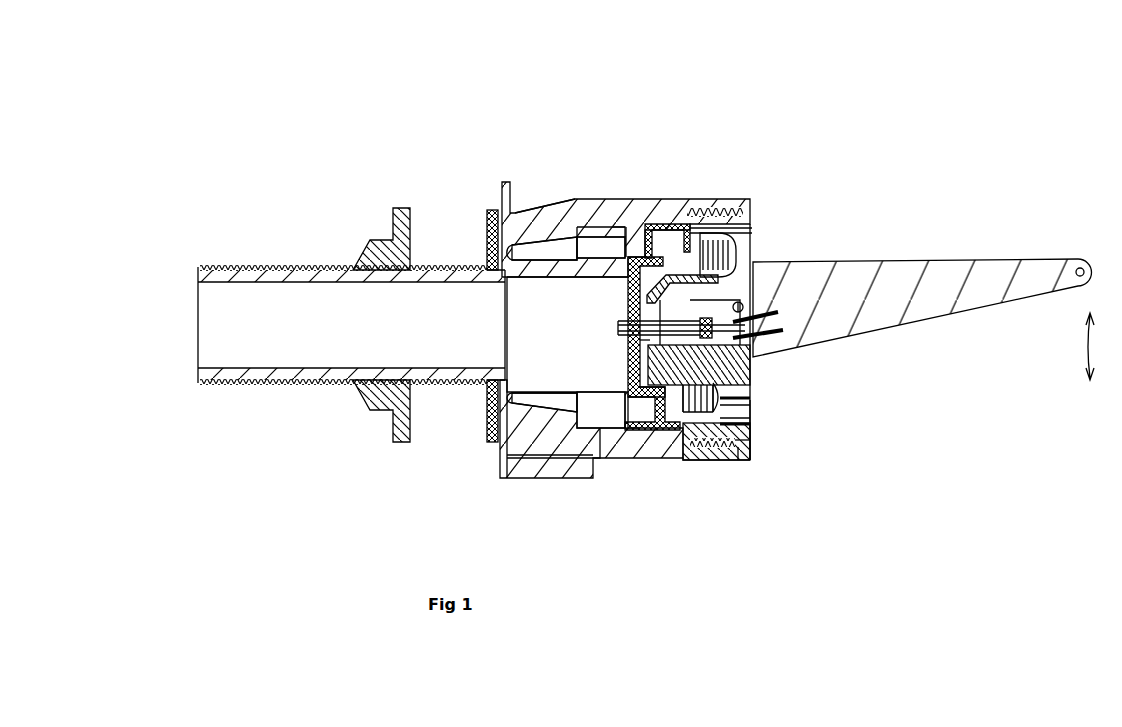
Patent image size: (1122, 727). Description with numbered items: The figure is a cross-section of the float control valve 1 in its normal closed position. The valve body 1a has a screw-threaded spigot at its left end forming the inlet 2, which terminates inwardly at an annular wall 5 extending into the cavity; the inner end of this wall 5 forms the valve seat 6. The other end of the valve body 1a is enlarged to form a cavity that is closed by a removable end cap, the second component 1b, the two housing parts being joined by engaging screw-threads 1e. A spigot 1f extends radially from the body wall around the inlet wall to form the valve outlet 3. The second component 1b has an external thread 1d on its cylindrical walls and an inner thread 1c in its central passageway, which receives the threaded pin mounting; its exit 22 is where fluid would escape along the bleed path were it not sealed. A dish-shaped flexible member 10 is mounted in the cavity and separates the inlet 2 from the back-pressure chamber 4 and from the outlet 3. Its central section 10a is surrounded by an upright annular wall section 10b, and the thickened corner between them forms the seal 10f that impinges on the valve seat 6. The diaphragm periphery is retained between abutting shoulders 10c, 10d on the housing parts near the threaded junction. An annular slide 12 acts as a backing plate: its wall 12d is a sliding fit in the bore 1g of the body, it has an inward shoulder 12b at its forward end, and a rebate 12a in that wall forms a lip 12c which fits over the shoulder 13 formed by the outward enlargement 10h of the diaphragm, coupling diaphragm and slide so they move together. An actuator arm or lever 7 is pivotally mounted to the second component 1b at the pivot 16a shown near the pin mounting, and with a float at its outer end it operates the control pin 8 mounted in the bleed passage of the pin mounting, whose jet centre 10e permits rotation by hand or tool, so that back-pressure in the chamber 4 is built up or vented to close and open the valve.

The valve 1 is at (503, 188).
The valve body 1a is at (545, 222).
The second component 1b is at (738, 210).
The inner thread 1c is at (752, 425).
The external thread 1d is at (740, 458).
The screw-threads 1e is at (718, 445).
The spigot 1f is at (620, 250).
The bore 1g is at (627, 235).
The inlet 2 is at (426, 325).
The valve outlet 3 is at (547, 467).
The back-pressure chamber 4 is at (770, 243).
The annular wall 5 is at (560, 387).
The valve seat 6 is at (623, 272).
The lever 7 is at (895, 275).
The control pin 8 is at (618, 323).
The flexible member 10 is at (700, 230).
The central section 10a is at (633, 285).
The annular wall section 10b is at (675, 220).
The abutting shoulder 10c is at (683, 458).
The abutting shoulder 10d is at (683, 458).
The jet centre 10e is at (632, 337).
The seal 10f is at (595, 427).
The enlargement 10h is at (632, 425).
The slide 12 is at (590, 240).
The rebate 12a is at (660, 215).
The shoulder 12b is at (642, 222).
The lip 12c is at (618, 460).
The wall 12d is at (615, 235).
The shoulder 13 is at (627, 382).
The pivot pin 16a is at (743, 303).
The exit 22 is at (752, 358).